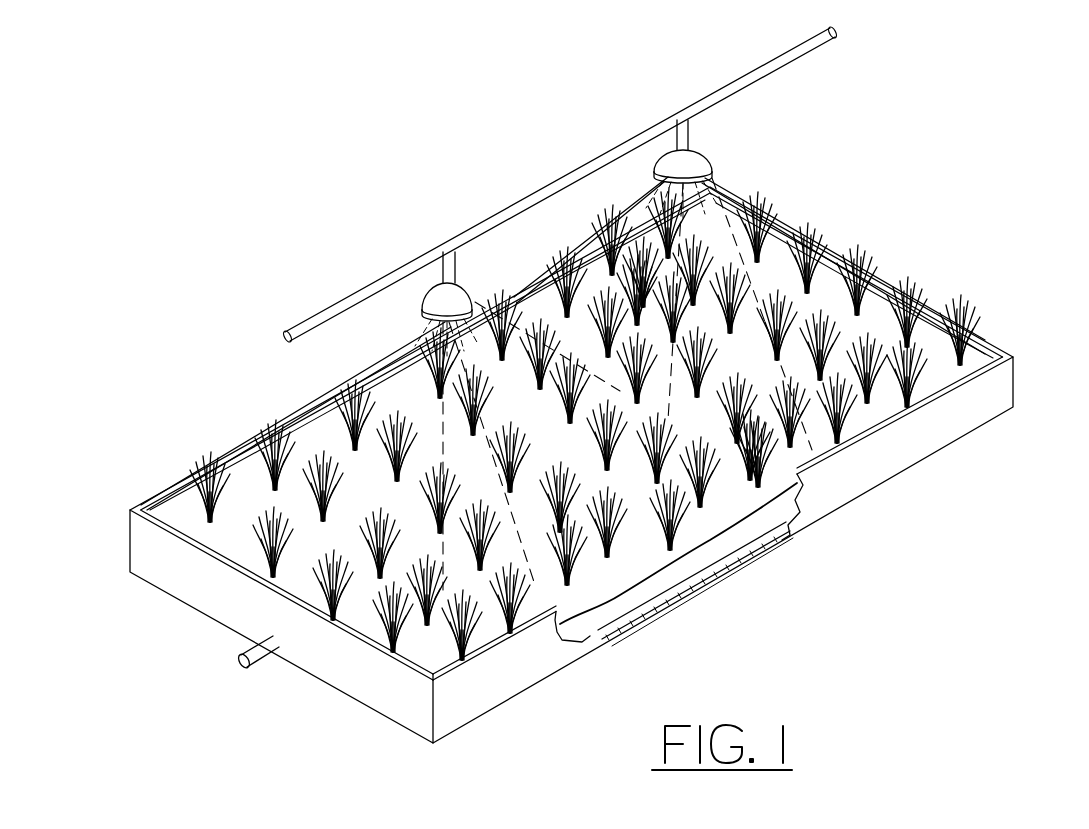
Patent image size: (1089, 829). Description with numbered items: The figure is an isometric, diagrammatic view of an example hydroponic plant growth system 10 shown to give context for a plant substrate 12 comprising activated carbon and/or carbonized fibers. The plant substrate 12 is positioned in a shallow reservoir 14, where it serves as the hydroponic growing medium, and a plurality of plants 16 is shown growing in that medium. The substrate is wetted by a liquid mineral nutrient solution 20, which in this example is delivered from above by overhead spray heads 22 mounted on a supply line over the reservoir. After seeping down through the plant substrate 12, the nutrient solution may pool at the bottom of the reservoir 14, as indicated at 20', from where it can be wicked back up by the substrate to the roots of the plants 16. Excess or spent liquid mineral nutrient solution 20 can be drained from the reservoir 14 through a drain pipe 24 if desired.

The hydroponic plant growth system 10 is at (246, 333).
The plant substrate 12 is at (873, 322).
The reservoir 14 is at (991, 347).
The plants 16 is at (853, 293).
The liquid mineral nutrient solution 20 is at (585, 415).
The pooled liquid mineral nutrient solution 20' is at (706, 564).
The overhead spray heads 22 is at (466, 292).
The drain pipe 24 is at (247, 653).